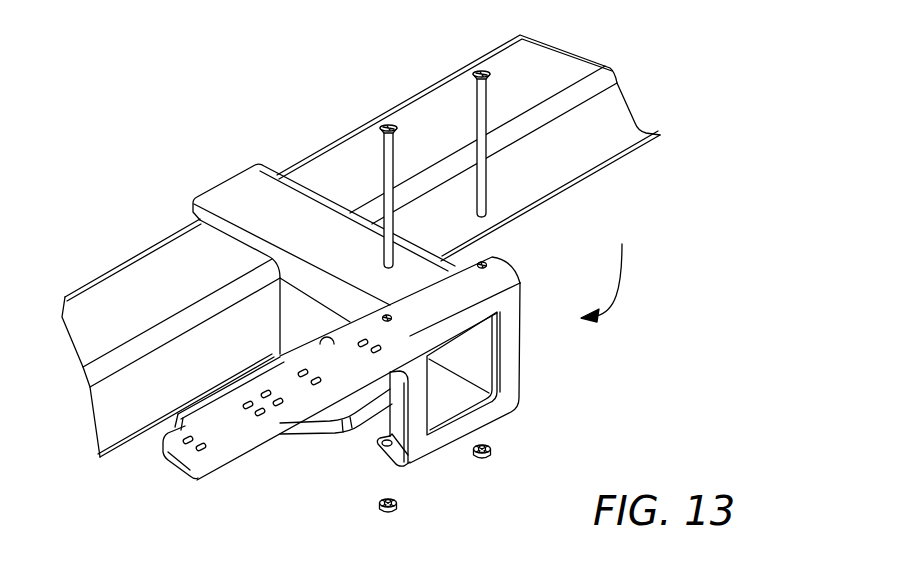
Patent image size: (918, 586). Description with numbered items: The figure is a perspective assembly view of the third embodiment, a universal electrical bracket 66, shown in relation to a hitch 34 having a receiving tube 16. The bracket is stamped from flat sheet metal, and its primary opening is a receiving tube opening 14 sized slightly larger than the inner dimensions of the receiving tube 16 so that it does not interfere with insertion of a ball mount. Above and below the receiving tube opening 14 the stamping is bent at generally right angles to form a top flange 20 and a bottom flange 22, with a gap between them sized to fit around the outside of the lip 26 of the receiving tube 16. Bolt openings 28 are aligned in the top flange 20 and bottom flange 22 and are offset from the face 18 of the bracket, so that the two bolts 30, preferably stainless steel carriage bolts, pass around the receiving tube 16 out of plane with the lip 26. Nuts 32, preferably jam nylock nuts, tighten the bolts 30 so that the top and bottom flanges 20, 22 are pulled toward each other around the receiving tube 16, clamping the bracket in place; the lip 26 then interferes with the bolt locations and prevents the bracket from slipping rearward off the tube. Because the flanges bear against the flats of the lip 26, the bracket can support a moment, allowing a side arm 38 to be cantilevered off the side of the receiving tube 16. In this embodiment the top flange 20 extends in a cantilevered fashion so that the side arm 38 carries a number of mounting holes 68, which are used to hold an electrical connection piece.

The receiving tube opening 14 is at (473, 358).
The receiving tube 16 is at (247, 197).
The face of the bracket 18 is at (516, 371).
The top flange 20 is at (521, 283).
The bottom flange 22 is at (396, 458).
The lip of the receiving tube 26 is at (394, 407).
The bolt openings 28 is at (437, 300).
The bolts 30 is at (477, 74).
The nuts 32 is at (491, 458).
The hitch 34 is at (143, 297).
The side arm 38 is at (163, 435).
The universal electrical bracket 66 is at (609, 271).
The mounting holes 68 is at (315, 383).